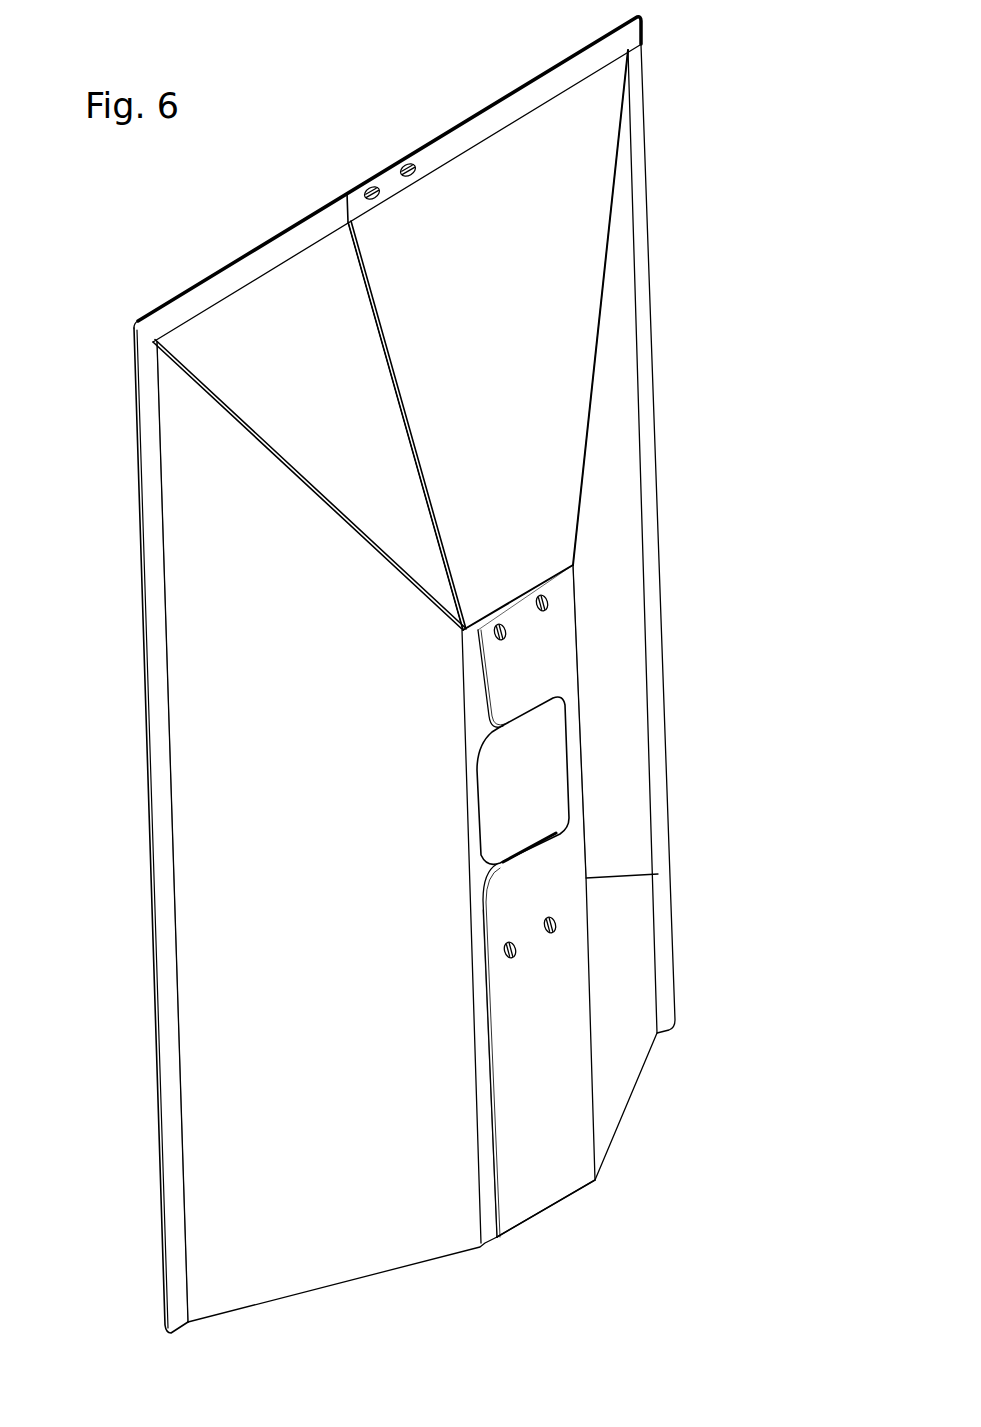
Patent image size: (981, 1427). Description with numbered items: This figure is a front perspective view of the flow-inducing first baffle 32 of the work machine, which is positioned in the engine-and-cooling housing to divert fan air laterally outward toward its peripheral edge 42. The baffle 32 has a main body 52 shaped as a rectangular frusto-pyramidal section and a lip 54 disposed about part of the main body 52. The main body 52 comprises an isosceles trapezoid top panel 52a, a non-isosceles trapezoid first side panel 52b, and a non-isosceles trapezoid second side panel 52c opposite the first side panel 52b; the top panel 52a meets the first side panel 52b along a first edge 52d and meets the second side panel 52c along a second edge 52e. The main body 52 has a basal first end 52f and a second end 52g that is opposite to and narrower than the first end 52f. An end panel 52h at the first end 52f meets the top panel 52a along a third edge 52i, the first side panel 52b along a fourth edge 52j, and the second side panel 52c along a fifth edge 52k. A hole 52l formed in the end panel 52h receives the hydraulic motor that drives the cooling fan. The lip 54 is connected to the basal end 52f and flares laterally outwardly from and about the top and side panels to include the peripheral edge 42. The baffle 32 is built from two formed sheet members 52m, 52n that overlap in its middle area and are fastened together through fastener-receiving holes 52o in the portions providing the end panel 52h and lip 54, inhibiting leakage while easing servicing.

The first baffle 32 is at (148, 255).
The peripheral edge 42 is at (148, 665).
The main body 52 is at (612, 488).
The top panel 52a is at (458, 292).
The first side panel 52b is at (340, 808).
The second side panel 52c is at (625, 728).
The first edge 52d is at (300, 473).
The second edge 52e is at (590, 396).
The first end 52f is at (560, 645).
The second end 52g is at (172, 800).
The end panel 52h is at (530, 1085).
The third edge 52i is at (508, 600).
The fourth edge 52j is at (462, 712).
The fifth edge 52k is at (640, 875).
The hole 52l is at (482, 820).
The first member 52m is at (377, 385).
The second member 52n is at (423, 394).
The fastener-receiving holes 52o is at (412, 176).
The lip 54 is at (485, 135).